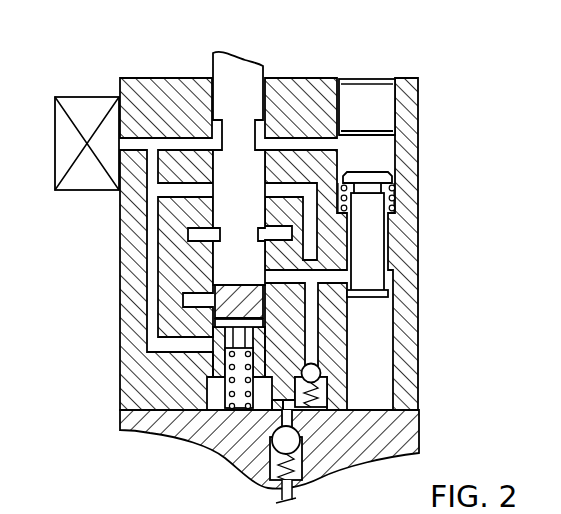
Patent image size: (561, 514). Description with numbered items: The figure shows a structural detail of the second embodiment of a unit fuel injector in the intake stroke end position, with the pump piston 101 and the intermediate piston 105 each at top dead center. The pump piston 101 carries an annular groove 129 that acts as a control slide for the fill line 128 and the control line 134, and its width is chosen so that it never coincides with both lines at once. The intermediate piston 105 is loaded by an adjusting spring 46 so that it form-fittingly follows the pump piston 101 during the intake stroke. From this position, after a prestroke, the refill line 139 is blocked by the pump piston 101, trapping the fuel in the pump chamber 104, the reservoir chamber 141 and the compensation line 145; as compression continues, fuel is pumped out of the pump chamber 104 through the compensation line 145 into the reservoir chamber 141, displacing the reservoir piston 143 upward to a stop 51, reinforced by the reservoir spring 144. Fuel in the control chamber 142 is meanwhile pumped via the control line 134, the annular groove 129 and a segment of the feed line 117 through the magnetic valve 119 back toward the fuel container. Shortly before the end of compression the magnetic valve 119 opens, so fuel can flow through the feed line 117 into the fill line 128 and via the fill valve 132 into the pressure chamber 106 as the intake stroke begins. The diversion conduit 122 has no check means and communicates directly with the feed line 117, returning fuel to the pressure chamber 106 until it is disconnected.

The adjusting spring 46 is at (230, 372).
The stop 51 is at (382, 142).
The pump piston 101 is at (230, 205).
The pump chamber 104 is at (230, 260).
The intermediate piston 105 is at (205, 378).
The pressure chamber 106 is at (200, 440).
The feed line 117 is at (137, 143).
The magnetic valve 119 is at (97, 108).
The diversion conduit 122 is at (180, 343).
The fill line 128 is at (175, 190).
The annular groove 129 is at (297, 100).
The fill valve 132 is at (330, 376).
The control line 134 is at (318, 128).
The refill line 139 is at (193, 233).
The reservoir chamber 141 is at (348, 295).
The control chamber 142 is at (382, 157).
The reservoir piston 143 is at (370, 238).
The reservoir spring 144 is at (400, 195).
The compensation line 145 is at (332, 278).